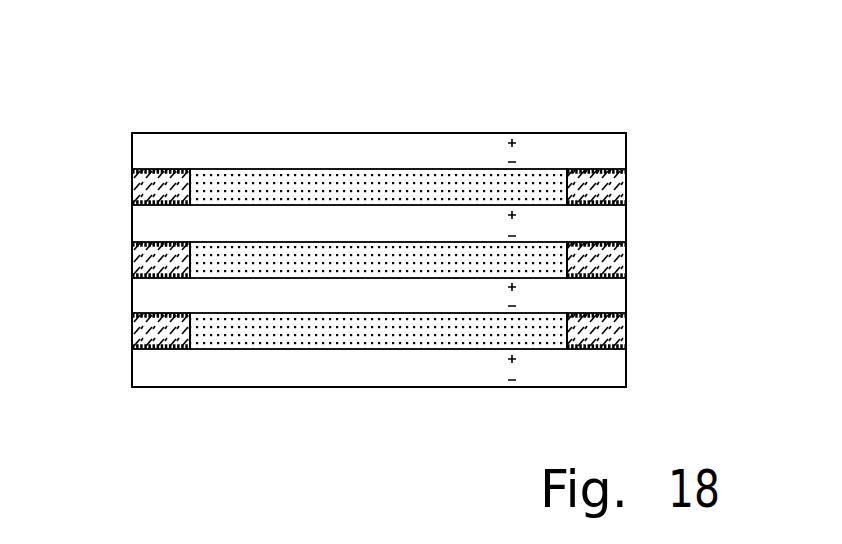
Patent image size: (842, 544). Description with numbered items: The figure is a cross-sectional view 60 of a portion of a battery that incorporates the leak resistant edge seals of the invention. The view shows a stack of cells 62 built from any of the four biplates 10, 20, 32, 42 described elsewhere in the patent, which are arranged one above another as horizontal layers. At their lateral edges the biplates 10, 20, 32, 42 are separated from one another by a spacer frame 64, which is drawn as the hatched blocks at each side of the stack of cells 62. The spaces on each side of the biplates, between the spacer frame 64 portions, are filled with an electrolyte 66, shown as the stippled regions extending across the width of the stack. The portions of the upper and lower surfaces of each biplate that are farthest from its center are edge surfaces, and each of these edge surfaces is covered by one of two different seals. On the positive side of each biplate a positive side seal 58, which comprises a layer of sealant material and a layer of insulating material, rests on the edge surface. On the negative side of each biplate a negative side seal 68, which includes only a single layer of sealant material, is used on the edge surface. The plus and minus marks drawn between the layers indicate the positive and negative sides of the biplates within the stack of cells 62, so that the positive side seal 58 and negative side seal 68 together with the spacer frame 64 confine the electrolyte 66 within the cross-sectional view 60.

The cross-sectional view 60 is at (391, 243).
The stack of cells 62 is at (391, 273).
The electrolyte 66 is at (353, 183).
The negative side seal 68 is at (610, 172).
The spacer frame 64 is at (660, 229).
The positive side seal 58 is at (608, 205).
The biplate 10 is at (442, 273).
The biplate 20 is at (442, 234).
The biplate 32 is at (442, 234).
The biplate 42 is at (442, 234).